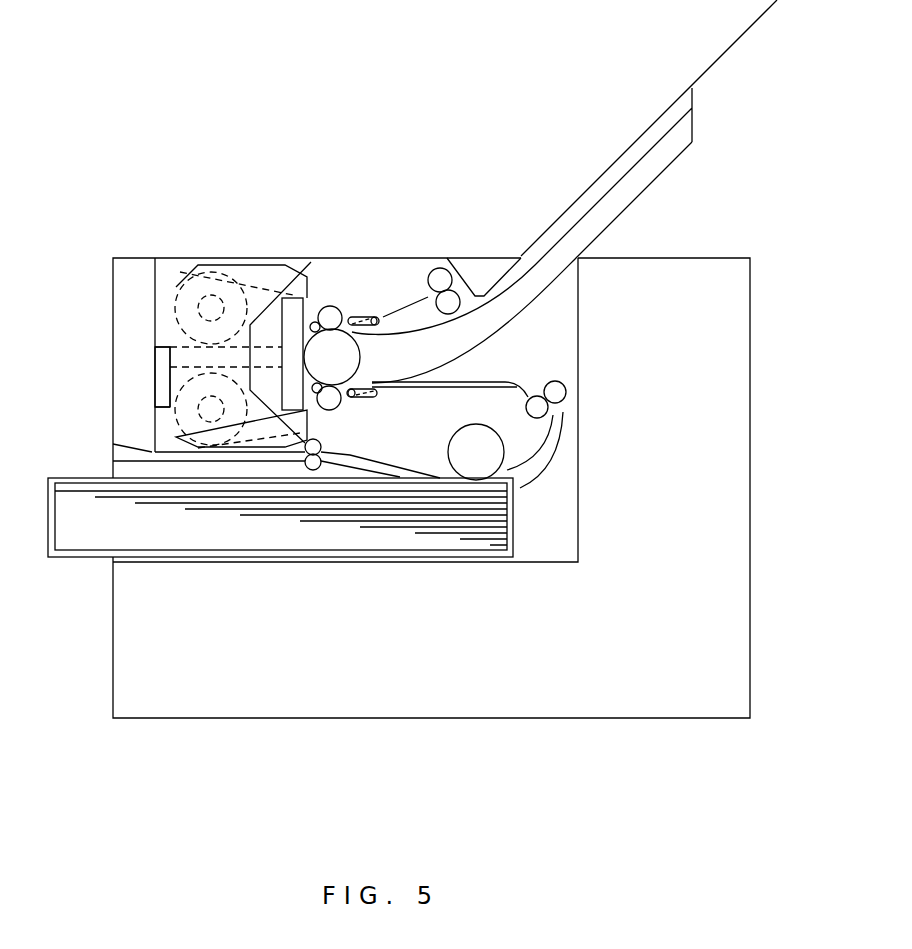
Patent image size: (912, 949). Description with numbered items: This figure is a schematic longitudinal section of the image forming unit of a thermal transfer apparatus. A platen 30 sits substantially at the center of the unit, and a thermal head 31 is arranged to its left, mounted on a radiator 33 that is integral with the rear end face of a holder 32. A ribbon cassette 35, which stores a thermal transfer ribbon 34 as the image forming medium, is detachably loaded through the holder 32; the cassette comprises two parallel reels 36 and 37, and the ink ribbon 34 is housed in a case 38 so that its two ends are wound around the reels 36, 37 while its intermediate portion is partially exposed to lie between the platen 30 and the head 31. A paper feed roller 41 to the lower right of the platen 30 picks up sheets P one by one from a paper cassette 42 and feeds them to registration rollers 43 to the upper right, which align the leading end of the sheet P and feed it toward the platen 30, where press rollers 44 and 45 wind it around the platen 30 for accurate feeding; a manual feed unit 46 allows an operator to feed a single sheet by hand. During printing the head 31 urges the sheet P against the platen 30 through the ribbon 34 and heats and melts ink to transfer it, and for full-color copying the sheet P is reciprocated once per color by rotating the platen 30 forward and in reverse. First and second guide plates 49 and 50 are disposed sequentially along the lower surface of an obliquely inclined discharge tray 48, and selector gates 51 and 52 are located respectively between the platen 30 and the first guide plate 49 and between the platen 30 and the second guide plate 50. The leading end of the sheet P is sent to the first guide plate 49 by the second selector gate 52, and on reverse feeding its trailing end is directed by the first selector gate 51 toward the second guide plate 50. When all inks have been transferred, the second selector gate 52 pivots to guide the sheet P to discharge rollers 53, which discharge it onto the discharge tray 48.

The platen 30 is at (352, 357).
The thermal head 31 is at (315, 270).
The holder 32 is at (155, 360).
The radiator 33 is at (288, 268).
The thermal transfer ribbon 34 is at (325, 306).
The ribbon cassette 35 is at (248, 265).
The reel 36 is at (198, 304).
The reel 37 is at (198, 410).
The case 38 is at (177, 325).
The paper feed roller 41 is at (470, 436).
The paper cassette 42 is at (513, 513).
The registration rollers 43 is at (553, 381).
The press roller 44 is at (335, 402).
The press roller 45 is at (347, 318).
The manual feed unit 46 is at (305, 456).
The discharge tray 48 is at (727, 50).
The first guide plate 49 is at (680, 120).
The second guide plate 50 is at (665, 169).
The first selector gate 51 is at (375, 397).
The second selector gate 52 is at (378, 315).
The discharge rollers 53 is at (446, 268).
The sheet P is at (400, 524).